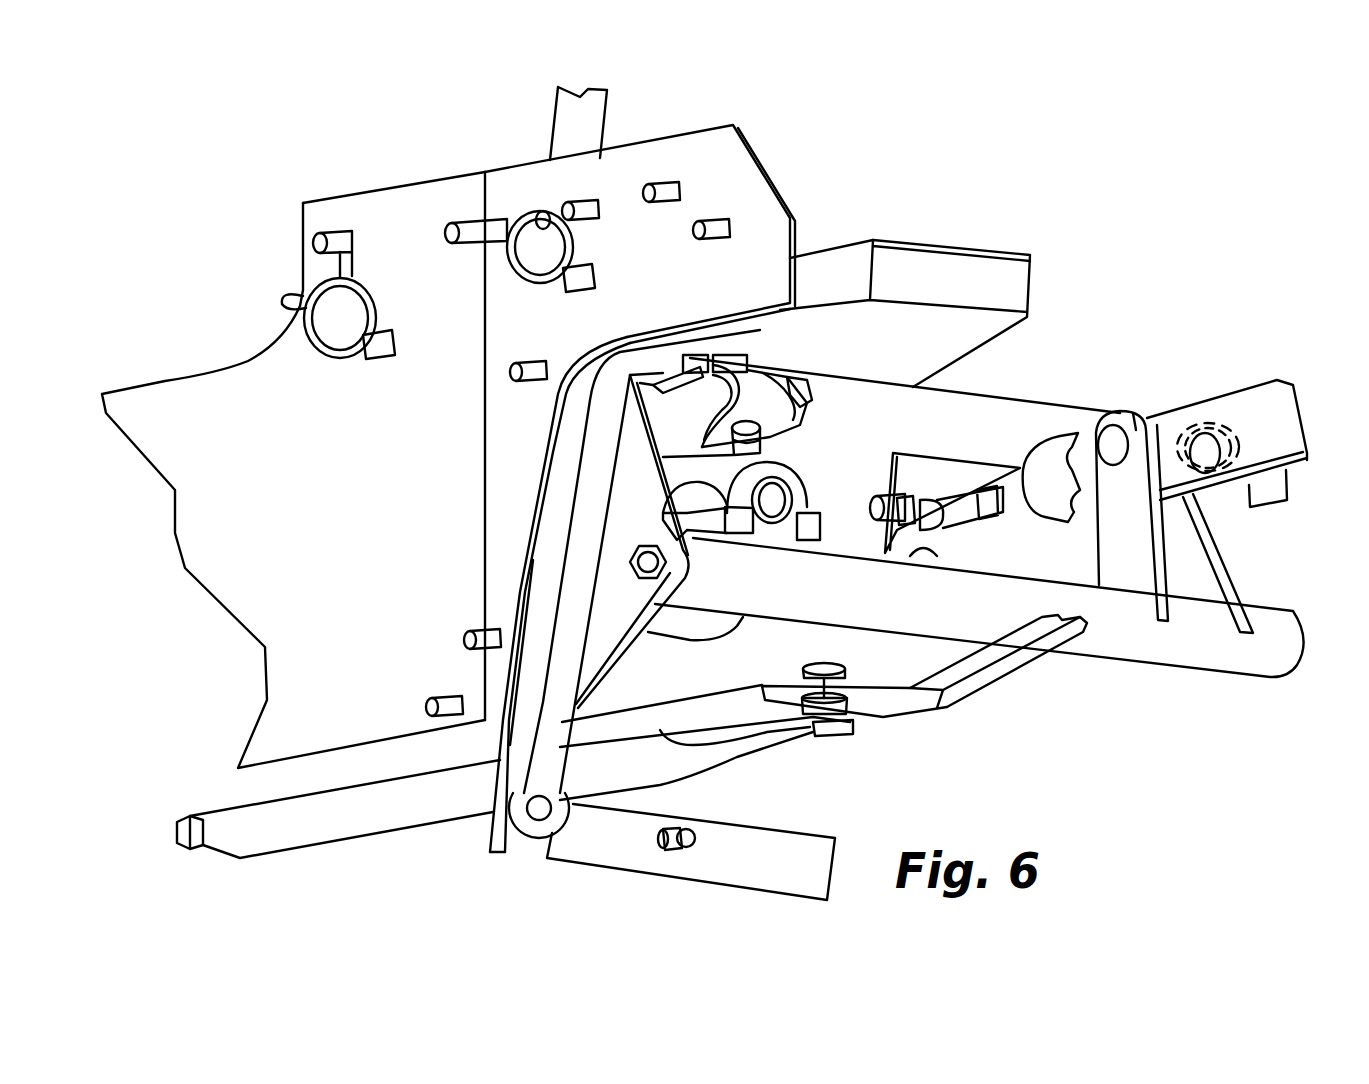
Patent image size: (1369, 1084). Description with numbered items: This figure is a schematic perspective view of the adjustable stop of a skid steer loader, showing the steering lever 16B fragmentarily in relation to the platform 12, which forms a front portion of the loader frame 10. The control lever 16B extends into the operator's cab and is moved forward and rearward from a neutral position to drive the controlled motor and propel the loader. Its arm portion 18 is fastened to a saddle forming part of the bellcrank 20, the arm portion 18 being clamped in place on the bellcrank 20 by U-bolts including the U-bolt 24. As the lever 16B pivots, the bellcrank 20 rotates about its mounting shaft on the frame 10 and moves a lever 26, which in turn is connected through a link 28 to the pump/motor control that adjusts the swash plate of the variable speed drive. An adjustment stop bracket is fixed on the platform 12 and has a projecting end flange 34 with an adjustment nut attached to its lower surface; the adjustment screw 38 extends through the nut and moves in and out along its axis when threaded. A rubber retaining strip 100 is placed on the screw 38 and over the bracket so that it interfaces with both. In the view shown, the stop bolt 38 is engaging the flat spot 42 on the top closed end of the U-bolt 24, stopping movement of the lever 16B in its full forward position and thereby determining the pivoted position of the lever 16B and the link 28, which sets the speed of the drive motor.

The frame 10 is at (268, 350).
The platform 12 is at (1002, 412).
The control lever 16B is at (578, 123).
The arm portion 18 is at (793, 566).
The bellcrank 20 is at (937, 600).
The U-bolt 24 is at (813, 497).
The lever 26 is at (1130, 563).
The link 28 is at (1173, 433).
The projecting end flange 34 is at (668, 387).
The adjustment screw 38 is at (808, 398).
The flat spot 42 is at (777, 455).
The rubber retaining strip 100 is at (760, 385).